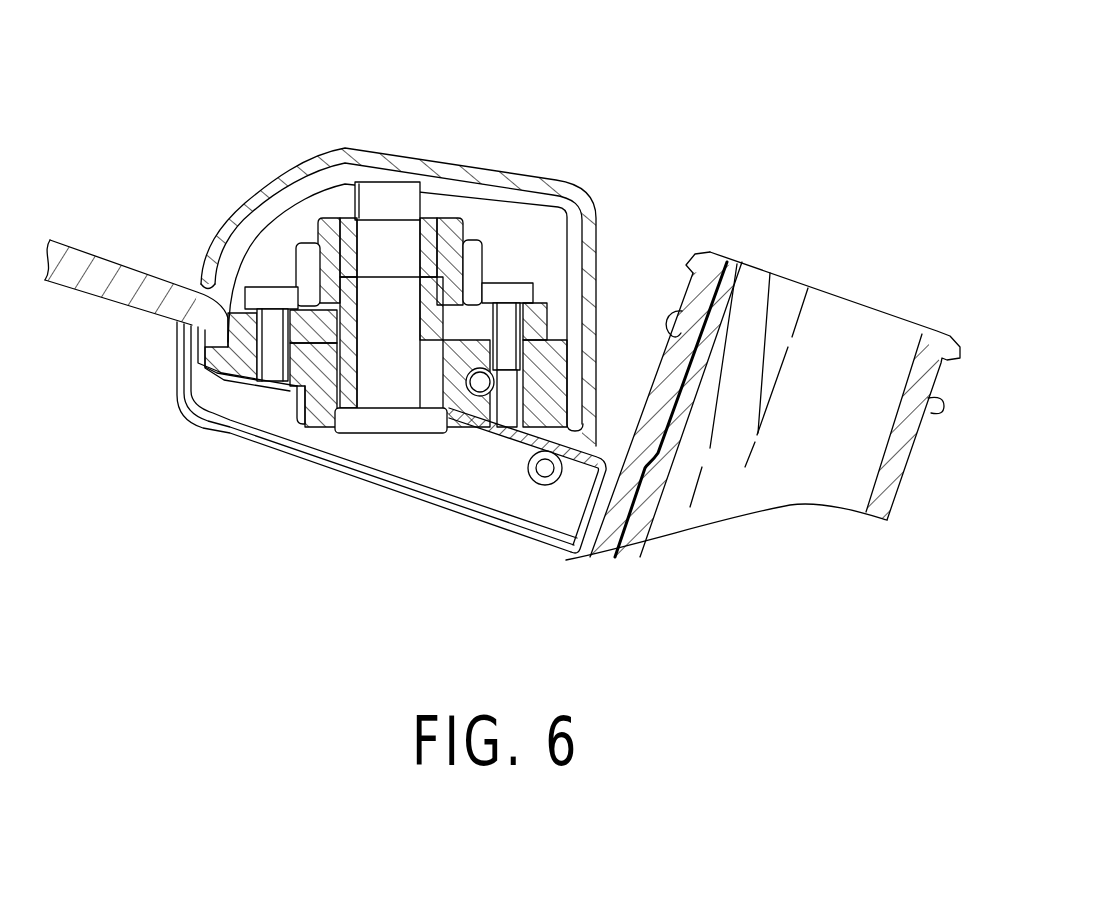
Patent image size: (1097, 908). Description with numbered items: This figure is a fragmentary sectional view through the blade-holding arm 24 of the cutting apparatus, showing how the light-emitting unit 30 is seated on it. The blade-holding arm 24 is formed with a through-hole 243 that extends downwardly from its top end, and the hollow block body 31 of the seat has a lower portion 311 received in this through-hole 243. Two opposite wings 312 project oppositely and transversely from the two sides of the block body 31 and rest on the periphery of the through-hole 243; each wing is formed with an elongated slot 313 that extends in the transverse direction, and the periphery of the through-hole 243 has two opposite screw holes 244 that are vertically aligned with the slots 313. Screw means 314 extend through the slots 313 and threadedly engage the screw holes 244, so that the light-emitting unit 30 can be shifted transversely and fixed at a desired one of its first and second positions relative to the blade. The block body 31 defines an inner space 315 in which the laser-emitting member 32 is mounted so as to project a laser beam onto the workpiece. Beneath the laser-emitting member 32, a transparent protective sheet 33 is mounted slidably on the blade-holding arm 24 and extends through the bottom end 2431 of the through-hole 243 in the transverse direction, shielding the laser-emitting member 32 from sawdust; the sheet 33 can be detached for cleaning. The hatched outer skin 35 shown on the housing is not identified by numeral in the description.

The blade-holding arm 24 is at (133, 273).
The light-emitting unit 30 is at (520, 148).
The block body 31 is at (452, 312).
The laser-emitting member 32 is at (391, 232).
The transparent protective sheet 33 is at (433, 420).
The cover skin 35 is at (360, 150).
The through-hole 243 is at (391, 467).
The screw holes 244 is at (547, 350).
The lower portion 311 is at (330, 418).
The wings 312 is at (540, 313).
The elongated slots 313 is at (513, 317).
The screw means 314 is at (513, 317).
The inner space 315 is at (431, 315).
The bottom end 2431 is at (330, 418).